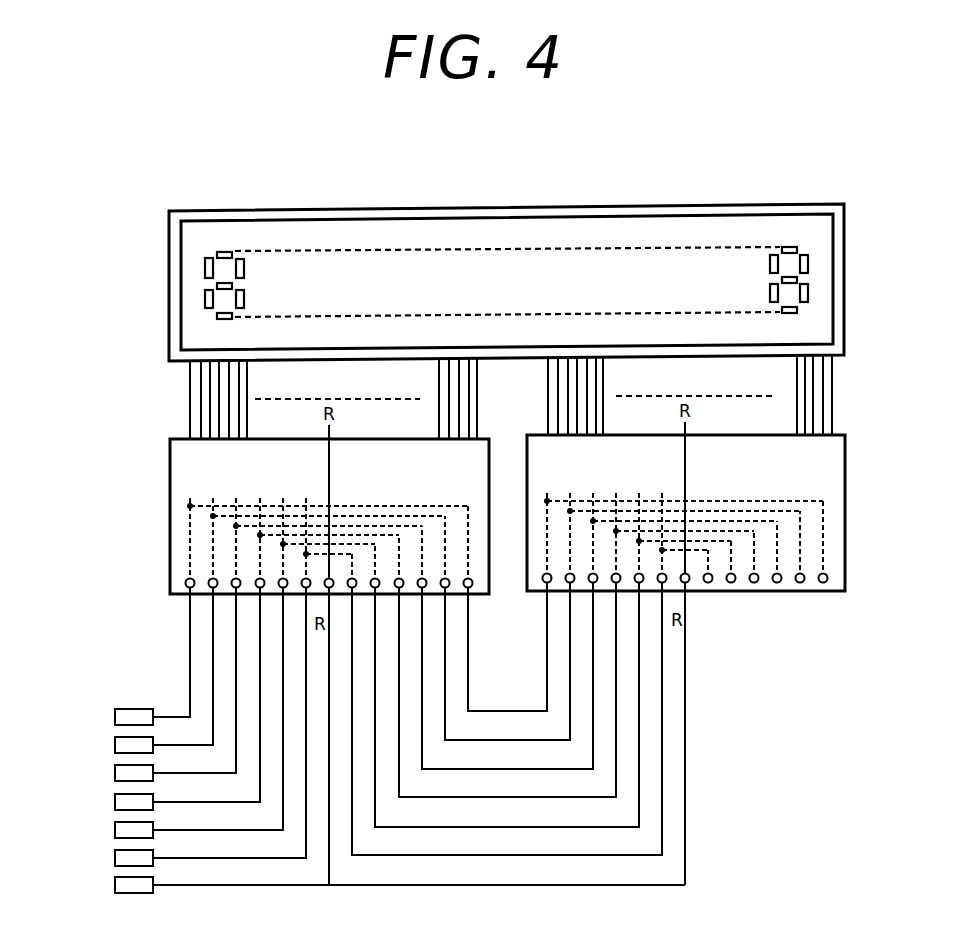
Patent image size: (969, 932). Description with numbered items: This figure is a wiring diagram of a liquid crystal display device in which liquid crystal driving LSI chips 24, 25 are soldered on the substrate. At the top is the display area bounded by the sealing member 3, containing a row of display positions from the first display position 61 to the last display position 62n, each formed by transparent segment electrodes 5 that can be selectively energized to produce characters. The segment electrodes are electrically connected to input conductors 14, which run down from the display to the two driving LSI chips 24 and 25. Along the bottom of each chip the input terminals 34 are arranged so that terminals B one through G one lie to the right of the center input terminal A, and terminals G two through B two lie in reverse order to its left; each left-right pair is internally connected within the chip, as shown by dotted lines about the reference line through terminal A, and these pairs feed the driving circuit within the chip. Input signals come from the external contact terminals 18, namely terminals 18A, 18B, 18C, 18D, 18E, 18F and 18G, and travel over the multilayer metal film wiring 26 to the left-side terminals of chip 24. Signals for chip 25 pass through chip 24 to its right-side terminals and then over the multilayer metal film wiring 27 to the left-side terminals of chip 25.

The sealing member 3 is at (170, 254).
The segment electrodes 5 is at (205, 299).
The display position 61 is at (177, 245).
The display position 62n is at (787, 240).
The input conductors 14 is at (200, 410).
The liquid crystal driving LSI chip 24 is at (200, 482).
The liquid crystal driving LSI chip 25 is at (537, 478).
The wiring 26 is at (205, 632).
The wiring 27 is at (507, 711).
The input terminal 34 is at (170, 583).
The external contact terminals 18 is at (110, 774).
The external contact terminal 18A is at (115, 885).
The external contact terminal 18B is at (115, 858).
The external contact terminal 18C is at (115, 830).
The external contact terminal 18D is at (115, 802).
The external contact terminal 18E is at (115, 773).
The external contact terminal 18F is at (115, 745).
The external contact terminal 18G is at (115, 717).